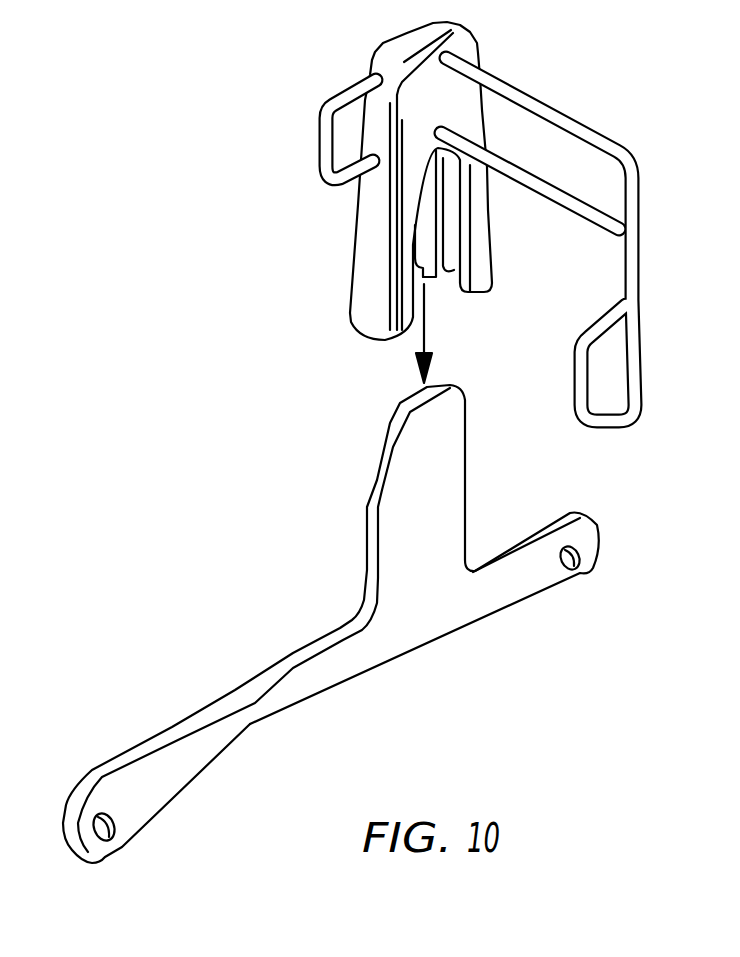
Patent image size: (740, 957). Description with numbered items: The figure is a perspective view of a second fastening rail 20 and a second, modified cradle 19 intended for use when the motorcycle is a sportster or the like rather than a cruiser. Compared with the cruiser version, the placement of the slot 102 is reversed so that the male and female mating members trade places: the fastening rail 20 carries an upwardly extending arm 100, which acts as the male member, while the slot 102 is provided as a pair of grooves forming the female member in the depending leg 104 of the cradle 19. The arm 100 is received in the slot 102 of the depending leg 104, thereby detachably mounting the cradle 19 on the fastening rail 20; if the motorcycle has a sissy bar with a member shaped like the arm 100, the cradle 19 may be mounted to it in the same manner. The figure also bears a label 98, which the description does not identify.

The cradle 19 is at (548, 100).
The depending leg 104 is at (353, 253).
The slot 102 is at (420, 266).
The upwardly extending arm 100 is at (465, 497).
The fastening rail 20 is at (257, 673).
The holes 98 is at (579, 563).